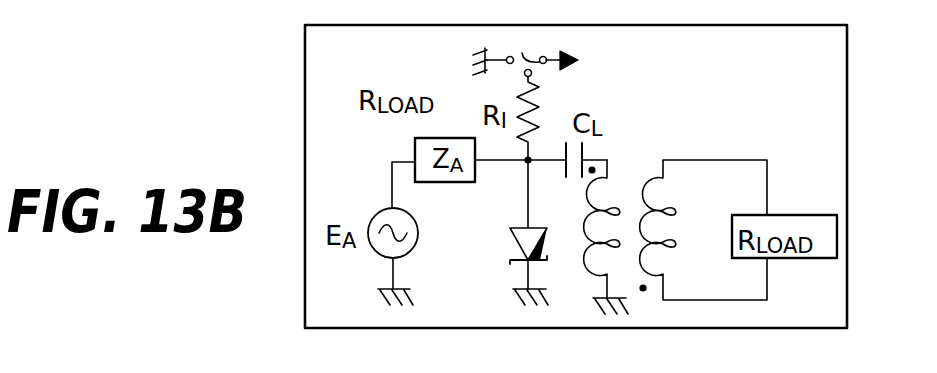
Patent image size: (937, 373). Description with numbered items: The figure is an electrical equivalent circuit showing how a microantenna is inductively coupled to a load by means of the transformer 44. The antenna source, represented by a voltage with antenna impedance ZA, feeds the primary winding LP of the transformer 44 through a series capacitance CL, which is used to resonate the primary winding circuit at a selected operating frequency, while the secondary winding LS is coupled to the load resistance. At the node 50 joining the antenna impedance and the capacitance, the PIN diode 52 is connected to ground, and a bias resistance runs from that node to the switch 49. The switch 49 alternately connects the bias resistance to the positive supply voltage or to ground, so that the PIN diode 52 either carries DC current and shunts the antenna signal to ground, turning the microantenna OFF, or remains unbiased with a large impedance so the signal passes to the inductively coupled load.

The transformer 44 is at (642, 137).
The switch 49 is at (547, 54).
The node / junction 50 is at (526, 164).
The PIN diode 52 is at (510, 228).